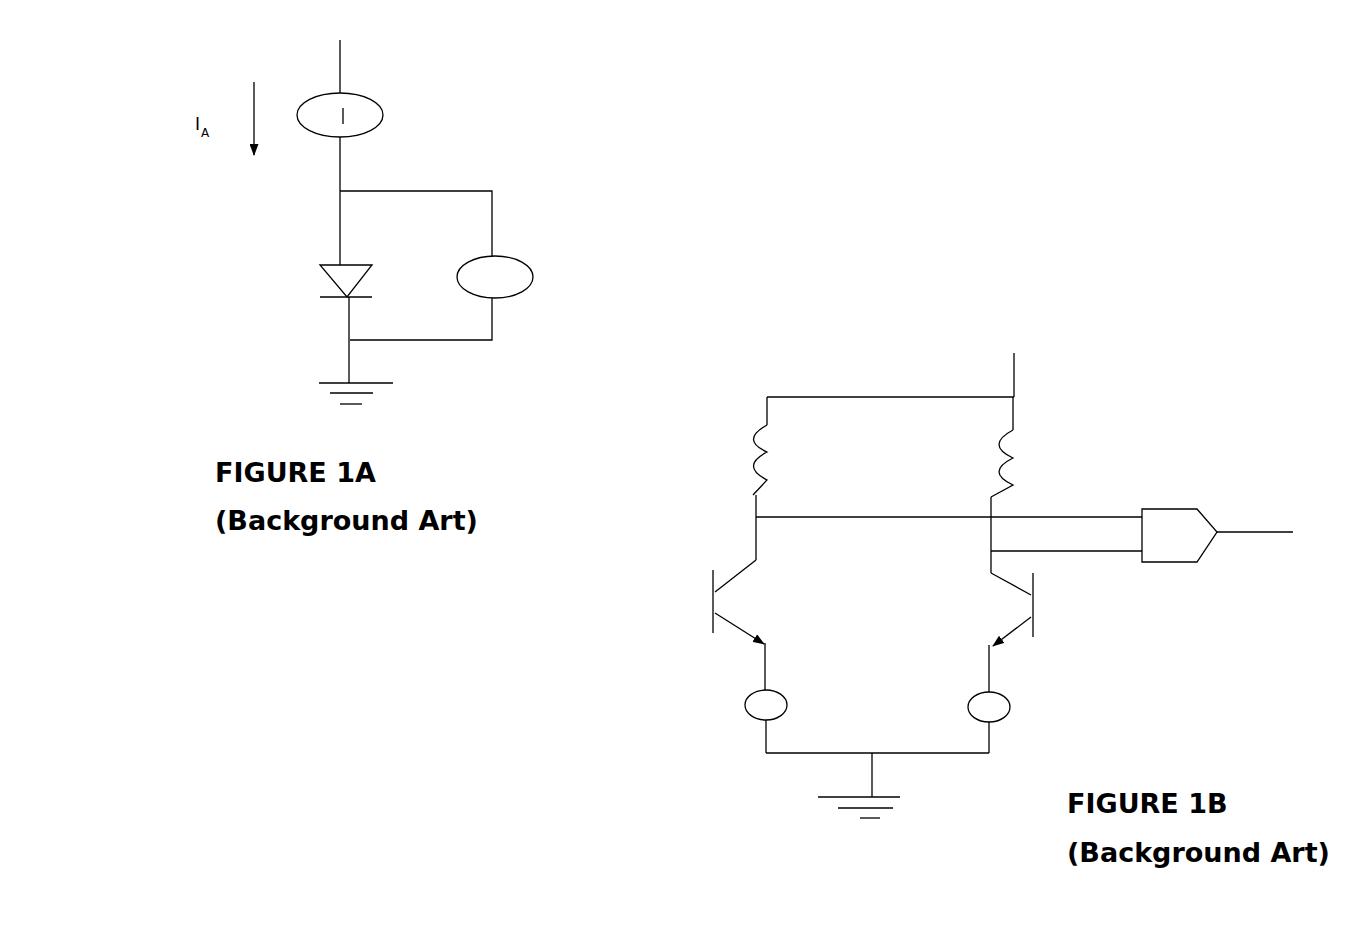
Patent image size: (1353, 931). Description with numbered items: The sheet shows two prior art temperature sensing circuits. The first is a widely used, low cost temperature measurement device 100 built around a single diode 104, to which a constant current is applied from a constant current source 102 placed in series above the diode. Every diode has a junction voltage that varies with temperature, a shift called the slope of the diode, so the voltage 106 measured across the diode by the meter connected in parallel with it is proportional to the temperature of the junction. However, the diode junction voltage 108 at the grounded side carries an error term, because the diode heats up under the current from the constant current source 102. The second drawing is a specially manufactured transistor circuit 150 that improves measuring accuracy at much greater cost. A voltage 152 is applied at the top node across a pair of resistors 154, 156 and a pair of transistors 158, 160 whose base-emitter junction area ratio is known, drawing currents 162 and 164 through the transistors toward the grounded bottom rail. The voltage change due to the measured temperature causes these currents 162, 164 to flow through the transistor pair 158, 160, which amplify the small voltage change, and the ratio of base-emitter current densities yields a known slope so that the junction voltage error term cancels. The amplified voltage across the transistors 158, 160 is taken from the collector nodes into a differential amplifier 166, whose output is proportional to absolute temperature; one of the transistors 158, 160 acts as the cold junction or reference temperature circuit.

In FIG. 1A, the temperature measurement device 100 is at (577, 95).
In FIG. 1A, the constant current source 102 is at (383, 104).
In FIG. 1A, the diode 104 is at (330, 254).
In FIG. 1A, the voltage across the diode 106 is at (534, 277).
In FIG. 1A, the diode junction voltage 108 is at (332, 316).
In FIG. 1B, the transistor circuit 150 is at (1168, 282).
In FIG. 1B, the voltage 152 is at (1036, 352).
In FIG. 1B, the resistor 154 is at (746, 452).
In FIG. 1B, the resistor 156 is at (1014, 442).
In FIG. 1B, the transistor 158 is at (713, 602).
In FIG. 1B, the transistor 160 is at (1044, 605).
In FIG. 1B, the current 162 is at (745, 700).
In FIG. 1B, the current 164 is at (1010, 702).
In FIG. 1B, the differential amplifier 166 is at (1207, 552).